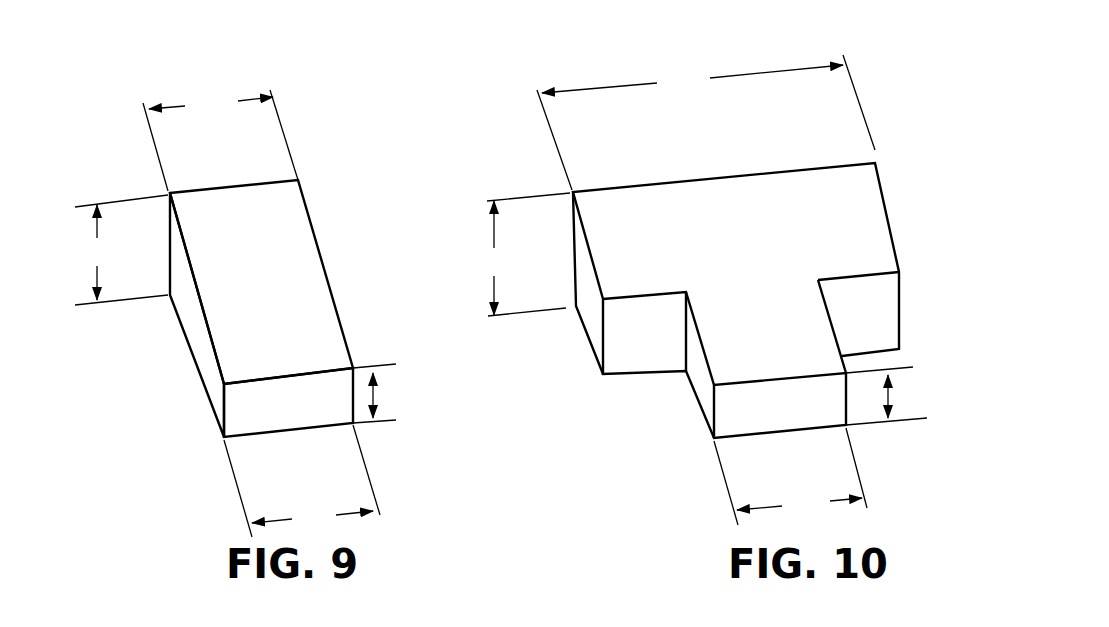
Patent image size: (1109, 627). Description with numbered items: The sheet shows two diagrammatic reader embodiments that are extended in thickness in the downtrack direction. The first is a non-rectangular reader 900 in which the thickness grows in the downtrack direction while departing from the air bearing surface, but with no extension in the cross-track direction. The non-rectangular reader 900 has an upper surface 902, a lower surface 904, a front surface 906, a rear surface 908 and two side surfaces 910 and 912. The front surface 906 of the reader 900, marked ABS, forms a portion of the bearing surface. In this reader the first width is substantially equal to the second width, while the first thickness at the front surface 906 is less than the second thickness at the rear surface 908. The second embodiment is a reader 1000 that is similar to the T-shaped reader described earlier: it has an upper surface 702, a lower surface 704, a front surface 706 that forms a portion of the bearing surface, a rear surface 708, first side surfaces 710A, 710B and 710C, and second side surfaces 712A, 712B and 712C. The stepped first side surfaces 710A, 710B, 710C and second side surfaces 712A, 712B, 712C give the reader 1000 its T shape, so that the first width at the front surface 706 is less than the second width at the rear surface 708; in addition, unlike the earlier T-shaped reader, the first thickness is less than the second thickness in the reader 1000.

In FIG. 9, the non-rectangular reader 900 is at (110, 120).
In FIG. 9, the upper surface 902 is at (273, 247).
In FIG. 9, the lower surface 904 is at (196, 366).
In FIG. 9, the front surface 906 is at (245, 418).
In FIG. 9, the rear surface 908 is at (200, 190).
In FIG. 9, the side surface 910 is at (193, 325).
In FIG. 9, the side surface 912 is at (325, 267).
In FIG. 10, the reader 1000 is at (496, 132).
In FIG. 10, the upper surface 702 is at (710, 203).
In FIG. 10, the lower surface 704 is at (622, 379).
In FIG. 10, the front surface 706 is at (729, 412).
In FIG. 10, the rear surface 708 is at (612, 188).
In FIG. 10, the first side surface 710A is at (703, 391).
In FIG. 10, the first side surface 710B is at (622, 315).
In FIG. 10, the first side surface 710C is at (583, 283).
In FIG. 10, the second side surface 712A is at (847, 362).
In FIG. 10, the second side surface 712B is at (847, 313).
In FIG. 10, the second side surface 712C is at (903, 280).